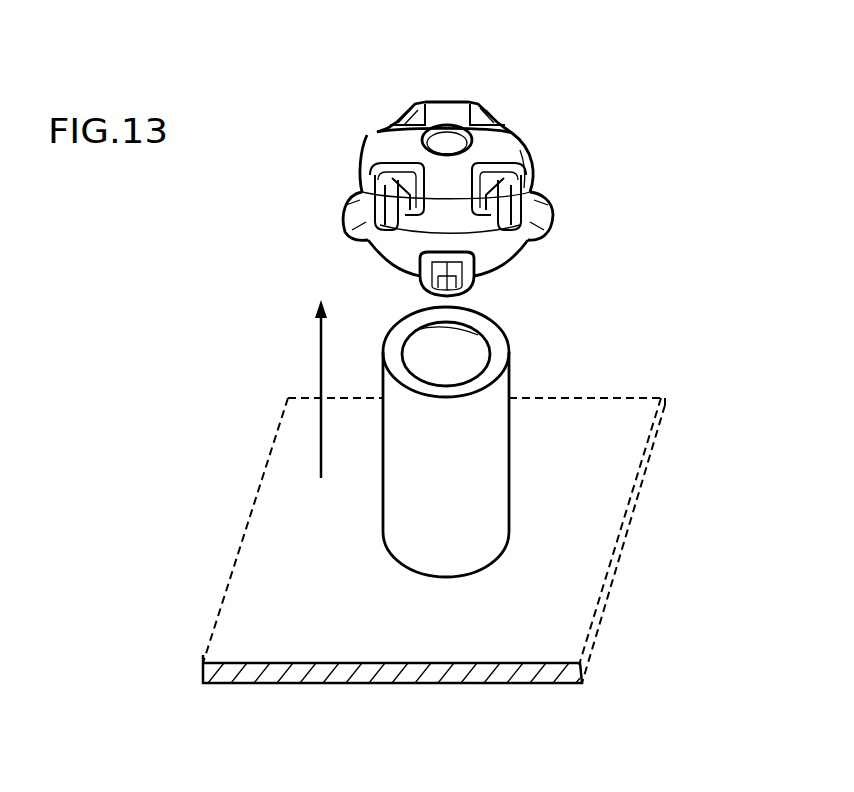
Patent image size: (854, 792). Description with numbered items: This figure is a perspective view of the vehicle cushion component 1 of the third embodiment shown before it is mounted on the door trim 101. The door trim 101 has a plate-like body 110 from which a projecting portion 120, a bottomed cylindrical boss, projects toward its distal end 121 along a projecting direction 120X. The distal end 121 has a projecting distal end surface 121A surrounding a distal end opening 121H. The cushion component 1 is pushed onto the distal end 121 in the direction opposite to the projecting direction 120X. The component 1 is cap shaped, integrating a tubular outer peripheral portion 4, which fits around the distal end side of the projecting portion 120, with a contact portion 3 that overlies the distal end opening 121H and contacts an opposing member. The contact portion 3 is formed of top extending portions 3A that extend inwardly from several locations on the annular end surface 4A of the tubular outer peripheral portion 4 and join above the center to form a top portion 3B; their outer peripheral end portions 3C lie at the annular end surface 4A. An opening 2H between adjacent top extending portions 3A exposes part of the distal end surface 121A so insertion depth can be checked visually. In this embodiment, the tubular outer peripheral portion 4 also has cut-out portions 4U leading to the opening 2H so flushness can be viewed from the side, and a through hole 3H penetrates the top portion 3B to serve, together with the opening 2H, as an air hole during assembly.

The vehicle cushion component 1 is at (492, 98).
The contact portion 3 is at (449, 106).
The top extending portions 3A is at (495, 138).
The top portion 3B is at (406, 122).
The outer peripheral end portions 3C is at (520, 157).
The through hole 3H is at (440, 133).
The opening 2H is at (368, 190).
The annular end surface 4A is at (498, 197).
The cut-out portions 4U is at (527, 229).
The tubular outer peripheral portion 4 is at (515, 250).
The projecting portion 120 is at (488, 493).
The distal end 121 is at (500, 388).
The projecting distal end surface 121A is at (495, 340).
The distal end opening 121H is at (404, 341).
The projecting direction 120X is at (319, 352).
The door trim 101 is at (647, 392).
The body 110 is at (282, 545).